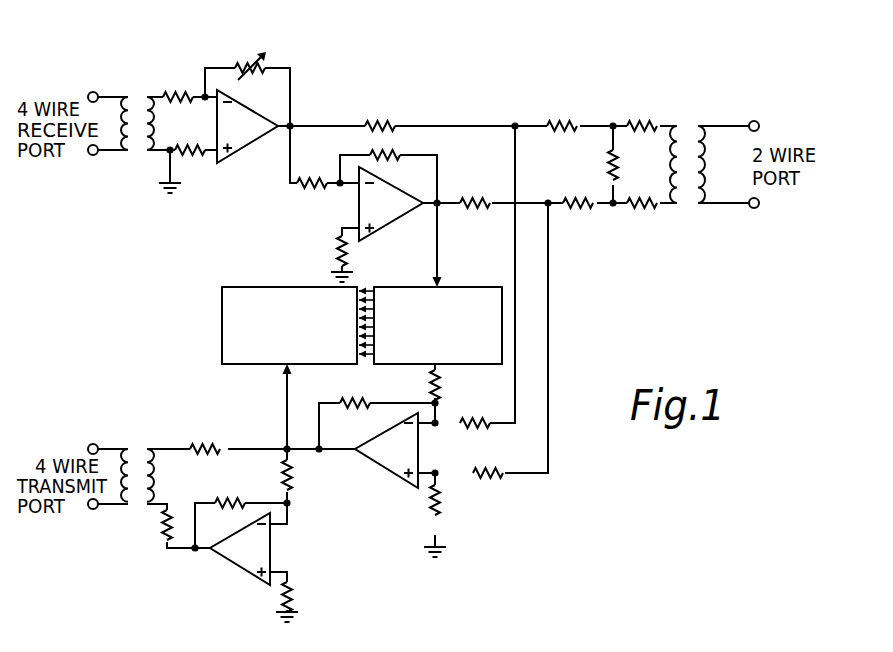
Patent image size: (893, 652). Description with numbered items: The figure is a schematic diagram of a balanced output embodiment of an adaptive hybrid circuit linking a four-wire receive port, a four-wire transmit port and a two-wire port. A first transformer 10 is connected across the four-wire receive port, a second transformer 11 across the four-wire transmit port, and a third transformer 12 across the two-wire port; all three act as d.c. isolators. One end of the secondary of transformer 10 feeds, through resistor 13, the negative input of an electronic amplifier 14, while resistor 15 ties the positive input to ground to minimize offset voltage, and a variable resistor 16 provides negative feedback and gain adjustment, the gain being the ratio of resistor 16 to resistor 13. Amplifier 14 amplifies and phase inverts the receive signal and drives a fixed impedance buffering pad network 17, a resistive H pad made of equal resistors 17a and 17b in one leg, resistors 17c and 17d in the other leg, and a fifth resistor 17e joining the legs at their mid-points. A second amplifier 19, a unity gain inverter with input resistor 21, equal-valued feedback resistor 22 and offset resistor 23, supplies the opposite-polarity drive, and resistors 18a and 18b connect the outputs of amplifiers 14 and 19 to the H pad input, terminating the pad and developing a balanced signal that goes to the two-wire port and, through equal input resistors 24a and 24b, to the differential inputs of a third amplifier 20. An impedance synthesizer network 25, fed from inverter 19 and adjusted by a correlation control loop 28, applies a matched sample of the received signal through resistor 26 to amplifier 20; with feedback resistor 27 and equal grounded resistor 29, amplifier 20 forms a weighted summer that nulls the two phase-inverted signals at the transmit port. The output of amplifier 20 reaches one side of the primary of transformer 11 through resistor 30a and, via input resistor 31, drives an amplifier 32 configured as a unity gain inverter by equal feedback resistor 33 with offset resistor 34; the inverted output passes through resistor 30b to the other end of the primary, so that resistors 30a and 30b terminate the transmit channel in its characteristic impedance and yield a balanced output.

The first transformer 10 is at (147, 94).
The second transformer 11 is at (146, 440).
The third transformer 12 is at (697, 123).
The resistor 13 is at (195, 97).
The electronic amplifier 14 is at (259, 139).
The resistor 15 is at (184, 147).
The variable resistor 16 is at (246, 58).
The impedance buffering pad network 17 is at (596, 166).
The resistor 17a is at (567, 127).
The resistor 17b is at (647, 123).
The resistor 17c is at (583, 210).
The resistor 17d is at (647, 215).
The fifth resistor 17e is at (610, 176).
The resistor 18a is at (370, 122).
The resistor 18b is at (475, 202).
The second amplifier 19 is at (400, 218).
The third amplifier 20 is at (393, 460).
The resistor 21 is at (320, 183).
The resistor 22 is at (391, 149).
The resistor 23 is at (338, 252).
The input resistor 24a is at (471, 427).
The input resistor 24b is at (479, 481).
The impedance synthesizer network 25 is at (442, 279).
The resistor 26 is at (437, 396).
The resistor 27 is at (353, 409).
The correlation control loop 28 is at (221, 341).
The resistor 29 is at (430, 496).
The resistor 30a is at (214, 449).
The resistor 30b is at (163, 519).
The input resistor 31 is at (291, 470).
The amplifier 32 is at (243, 556).
The resistor 33 is at (246, 500).
The resistor 34 is at (293, 600).